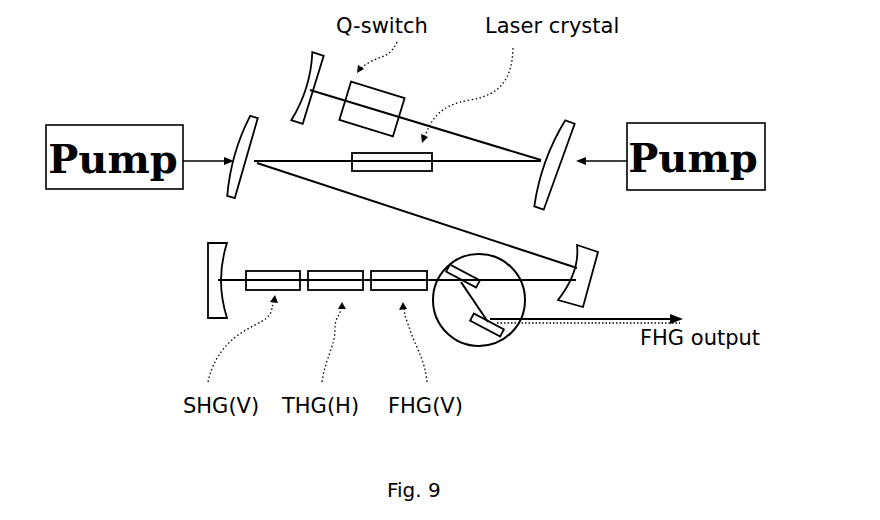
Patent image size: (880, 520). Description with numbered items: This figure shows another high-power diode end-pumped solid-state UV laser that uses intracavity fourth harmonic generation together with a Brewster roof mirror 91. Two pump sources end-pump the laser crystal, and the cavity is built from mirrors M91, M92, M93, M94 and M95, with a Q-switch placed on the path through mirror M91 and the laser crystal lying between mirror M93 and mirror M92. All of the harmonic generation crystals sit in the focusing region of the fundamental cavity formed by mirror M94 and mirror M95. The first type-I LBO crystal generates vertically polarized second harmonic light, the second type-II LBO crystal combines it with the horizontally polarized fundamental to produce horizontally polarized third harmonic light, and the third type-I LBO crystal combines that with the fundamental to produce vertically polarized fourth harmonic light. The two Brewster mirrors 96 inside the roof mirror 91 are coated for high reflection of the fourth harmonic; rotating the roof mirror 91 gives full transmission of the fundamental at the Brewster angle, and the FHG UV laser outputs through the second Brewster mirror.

The Brewster roof mirror 91 is at (527, 340).
The Brewster mirrors 96 is at (449, 290).
The mirror M91 is at (302, 74).
The mirror M92 is at (564, 149).
The mirror M93 is at (225, 143).
The mirror M94 is at (607, 276).
The mirror M95 is at (178, 280).